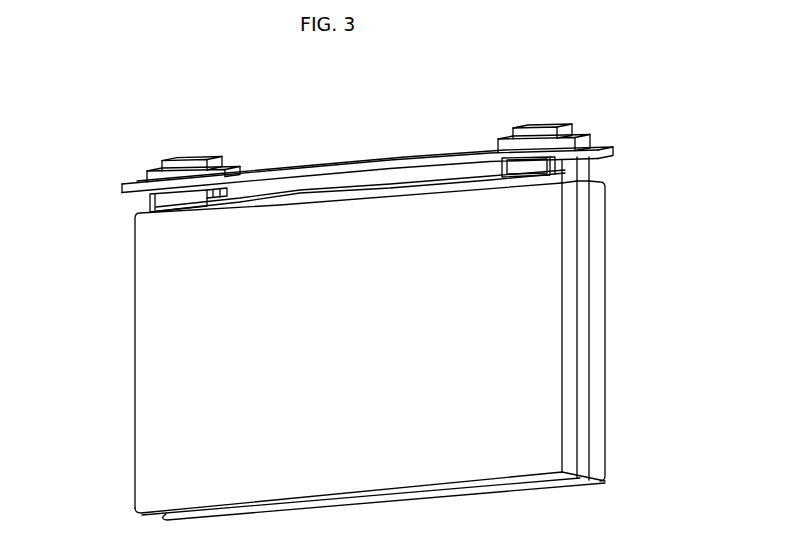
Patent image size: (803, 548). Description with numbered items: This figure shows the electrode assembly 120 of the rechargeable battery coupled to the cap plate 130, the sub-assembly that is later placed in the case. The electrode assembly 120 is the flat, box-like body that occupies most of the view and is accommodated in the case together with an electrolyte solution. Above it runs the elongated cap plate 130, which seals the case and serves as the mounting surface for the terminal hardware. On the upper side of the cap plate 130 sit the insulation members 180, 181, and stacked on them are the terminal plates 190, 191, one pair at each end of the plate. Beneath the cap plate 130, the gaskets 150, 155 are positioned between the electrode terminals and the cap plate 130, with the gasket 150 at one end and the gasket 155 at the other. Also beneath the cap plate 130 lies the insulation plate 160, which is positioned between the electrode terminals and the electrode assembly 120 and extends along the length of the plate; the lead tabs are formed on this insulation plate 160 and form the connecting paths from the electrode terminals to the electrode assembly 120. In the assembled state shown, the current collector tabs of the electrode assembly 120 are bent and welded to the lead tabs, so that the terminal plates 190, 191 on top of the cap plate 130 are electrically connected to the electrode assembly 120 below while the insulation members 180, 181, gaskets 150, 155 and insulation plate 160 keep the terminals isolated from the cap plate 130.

The electrode assembly 120 is at (573, 306).
The cap plate 130 is at (333, 166).
The gasket 150 is at (163, 200).
The gasket 155 is at (508, 168).
The insulation plate 160 is at (170, 215).
The insulation member 180 is at (152, 170).
The terminal plate 190 is at (185, 158).
The insulation member 181 is at (582, 145).
The terminal plate 191 is at (535, 130).